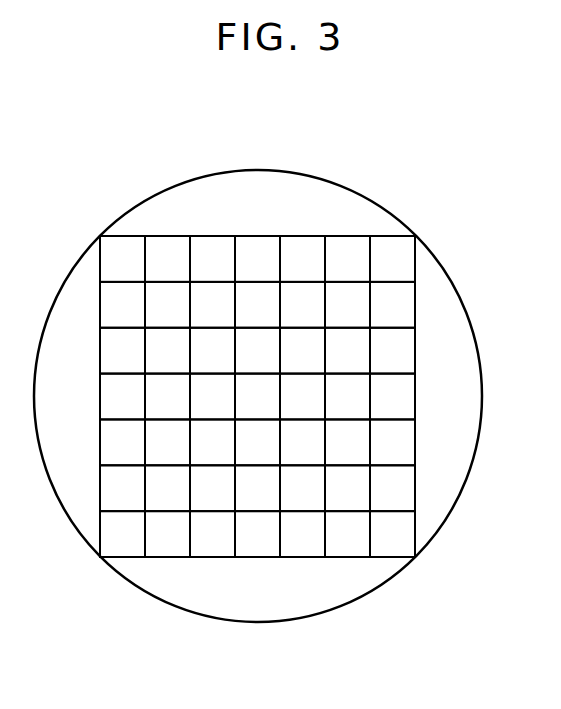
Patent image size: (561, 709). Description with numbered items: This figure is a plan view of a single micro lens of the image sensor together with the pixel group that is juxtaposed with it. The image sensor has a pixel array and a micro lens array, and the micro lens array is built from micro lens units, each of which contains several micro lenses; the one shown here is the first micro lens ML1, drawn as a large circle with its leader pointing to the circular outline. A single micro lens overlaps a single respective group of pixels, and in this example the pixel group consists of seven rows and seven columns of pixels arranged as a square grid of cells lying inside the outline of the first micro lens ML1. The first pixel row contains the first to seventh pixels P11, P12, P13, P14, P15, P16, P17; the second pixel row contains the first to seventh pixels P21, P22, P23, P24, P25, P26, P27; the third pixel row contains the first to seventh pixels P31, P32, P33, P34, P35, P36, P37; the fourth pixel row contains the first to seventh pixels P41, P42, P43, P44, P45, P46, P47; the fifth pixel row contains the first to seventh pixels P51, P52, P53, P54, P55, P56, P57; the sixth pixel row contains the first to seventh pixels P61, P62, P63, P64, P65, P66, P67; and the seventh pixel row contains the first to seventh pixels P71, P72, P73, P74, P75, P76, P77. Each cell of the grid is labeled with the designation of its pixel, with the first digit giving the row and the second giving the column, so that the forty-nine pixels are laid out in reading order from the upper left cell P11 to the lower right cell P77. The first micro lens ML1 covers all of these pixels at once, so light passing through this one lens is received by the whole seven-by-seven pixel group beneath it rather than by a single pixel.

The first micro lens ML1 is at (256, 170).
The first pixel in first pixel row P11 is at (122, 259).
The second pixel in first pixel row P12 is at (167, 259).
The third pixel in first pixel row P13 is at (212, 259).
The fourth pixel in first pixel row P14 is at (257, 259).
The fifth pixel in first pixel row P15 is at (302, 259).
The sixth pixel in first pixel row P16 is at (347, 259).
The seventh pixel in first pixel row P17 is at (392, 259).
The first pixel in second pixel row P21 is at (122, 305).
The second pixel in second pixel row P22 is at (167, 305).
The third pixel in second pixel row P23 is at (212, 305).
The fourth pixel in second pixel row P24 is at (257, 305).
The fifth pixel in second pixel row P25 is at (302, 305).
The sixth pixel in second pixel row P26 is at (347, 305).
The seventh pixel in second pixel row P27 is at (392, 305).
The first pixel in third pixel row P31 is at (122, 351).
The second pixel in third pixel row P32 is at (167, 351).
The third pixel in third pixel row P33 is at (212, 351).
The fourth pixel in third pixel row P34 is at (257, 351).
The fifth pixel in third pixel row P35 is at (302, 351).
The sixth pixel in third pixel row P36 is at (347, 351).
The seventh pixel in third pixel row P37 is at (392, 351).
The first pixel in fourth pixel row P41 is at (122, 397).
The second pixel in fourth pixel row P42 is at (167, 397).
The third pixel in fourth pixel row P43 is at (212, 397).
The fourth pixel in fourth pixel row P44 is at (257, 397).
The fifth pixel in fourth pixel row P45 is at (302, 397).
The sixth pixel in fourth pixel row P46 is at (347, 397).
The seventh pixel in fourth pixel row P47 is at (392, 397).
The first pixel in fifth pixel row P51 is at (122, 442).
The second pixel in fifth pixel row P52 is at (167, 442).
The third pixel in fifth pixel row P53 is at (212, 442).
The fourth pixel in fifth pixel row P54 is at (257, 442).
The fifth pixel in fifth pixel row P55 is at (302, 442).
The sixth pixel in fifth pixel row P56 is at (347, 442).
The seventh pixel in fifth pixel row P57 is at (392, 442).
The first pixel in sixth pixel row P61 is at (122, 488).
The second pixel in sixth pixel row P62 is at (167, 488).
The third pixel in sixth pixel row P63 is at (212, 488).
The fourth pixel in sixth pixel row P64 is at (257, 488).
The fifth pixel in sixth pixel row P65 is at (302, 488).
The sixth pixel in sixth pixel row P66 is at (347, 488).
The seventh pixel in sixth pixel row P67 is at (392, 488).
The first pixel in seventh pixel row P71 is at (122, 534).
The second pixel in seventh pixel row P72 is at (167, 534).
The third pixel in seventh pixel row P73 is at (212, 534).
The fourth pixel in seventh pixel row P74 is at (257, 534).
The fifth pixel in seventh pixel row P75 is at (302, 534).
The sixth pixel in seventh pixel row P76 is at (347, 534).
The seventh pixel in seventh pixel row P77 is at (392, 534).